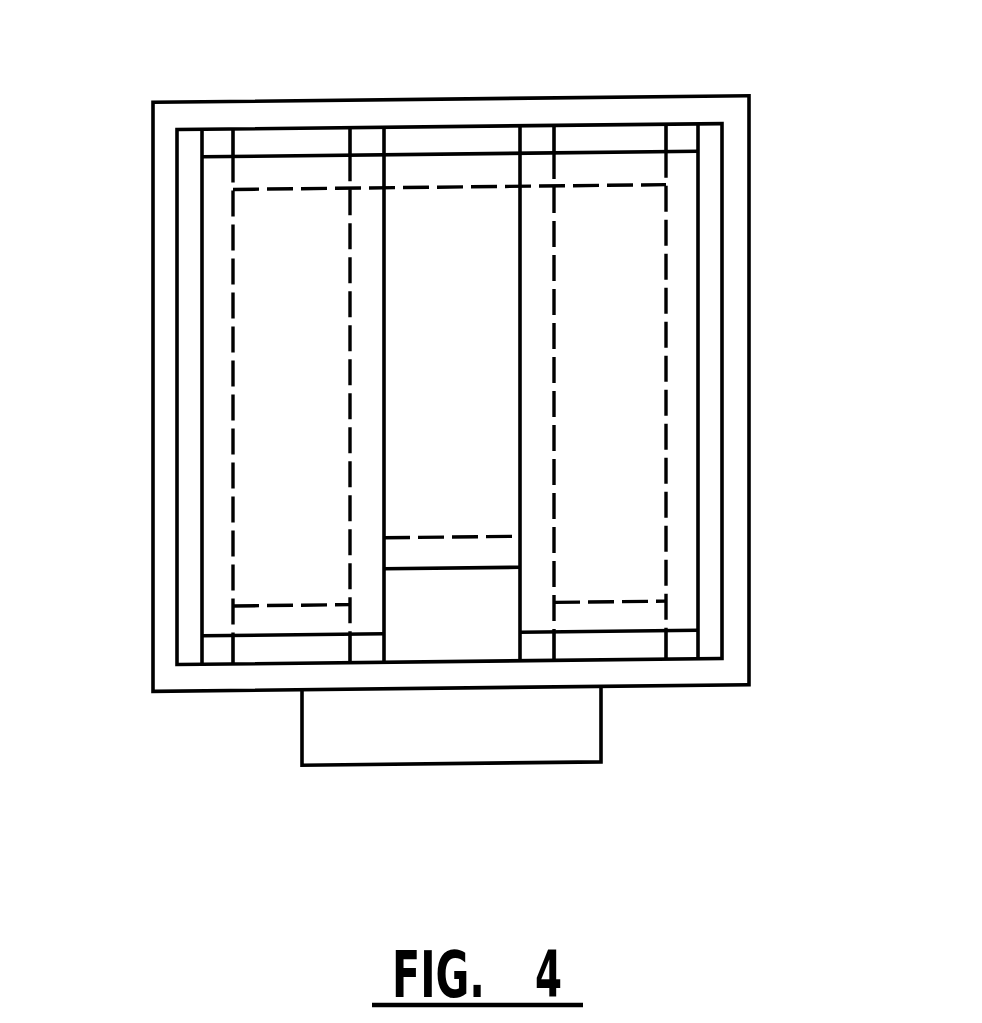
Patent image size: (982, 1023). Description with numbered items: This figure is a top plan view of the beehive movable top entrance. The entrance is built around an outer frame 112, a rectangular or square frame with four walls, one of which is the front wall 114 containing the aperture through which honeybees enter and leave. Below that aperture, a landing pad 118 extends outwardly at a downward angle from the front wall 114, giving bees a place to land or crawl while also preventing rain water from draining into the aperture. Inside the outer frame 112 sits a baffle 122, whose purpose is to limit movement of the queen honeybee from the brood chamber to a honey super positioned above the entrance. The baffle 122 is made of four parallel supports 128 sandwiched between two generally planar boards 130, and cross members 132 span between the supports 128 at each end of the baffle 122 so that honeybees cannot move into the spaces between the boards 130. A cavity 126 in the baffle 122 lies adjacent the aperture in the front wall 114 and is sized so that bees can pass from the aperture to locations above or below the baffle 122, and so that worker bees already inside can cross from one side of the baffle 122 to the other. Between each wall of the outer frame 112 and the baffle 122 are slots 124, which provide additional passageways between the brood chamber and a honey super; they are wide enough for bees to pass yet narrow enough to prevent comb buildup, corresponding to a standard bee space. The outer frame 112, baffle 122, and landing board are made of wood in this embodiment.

The outer frame 112 is at (747, 162).
The front wall 114 is at (728, 688).
The landing pad 118 is at (397, 743).
The baffle 122 is at (500, 414).
The slots 124 is at (582, 128).
The cavity 126 is at (455, 635).
The parallel supports 128 is at (683, 314).
The planar boards 130 is at (270, 494).
The cross members 132 is at (613, 170).